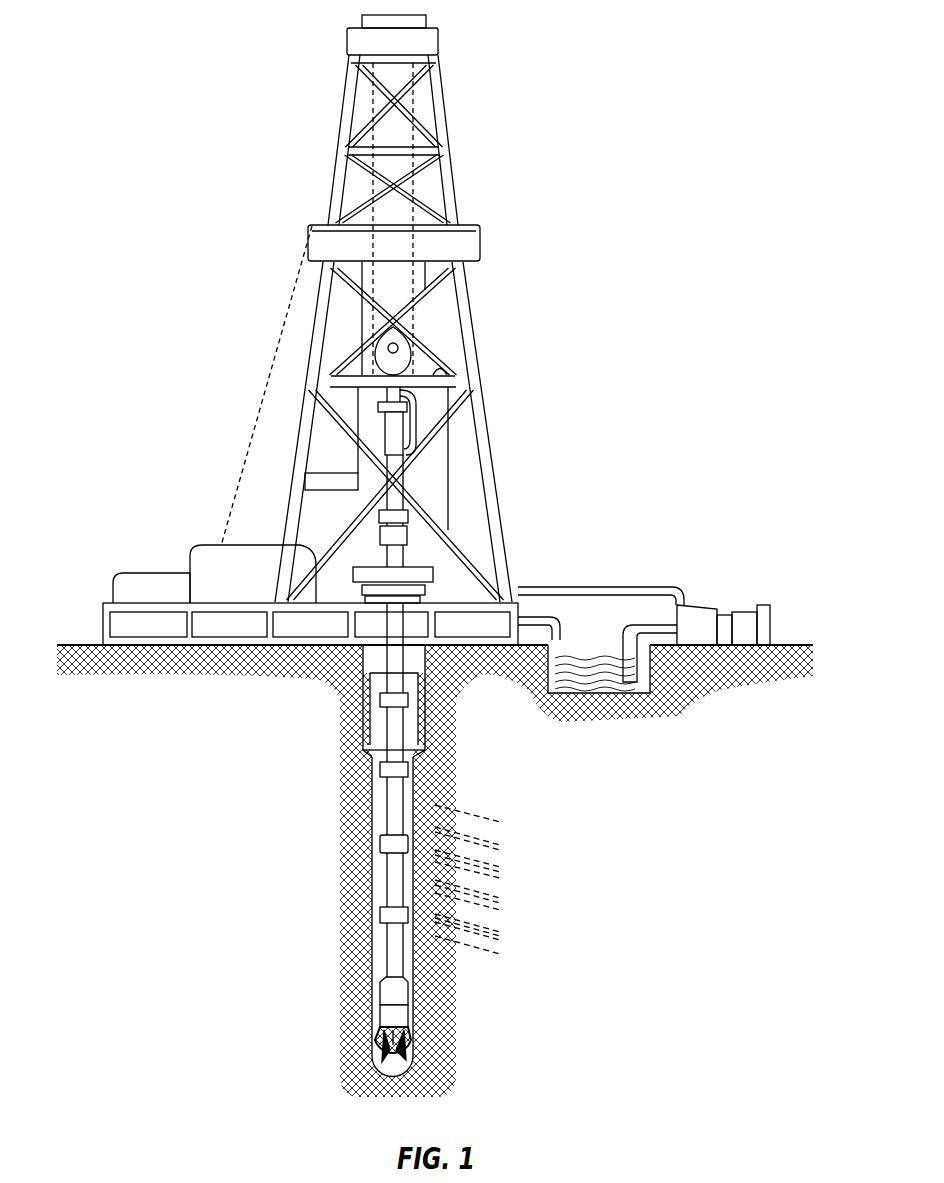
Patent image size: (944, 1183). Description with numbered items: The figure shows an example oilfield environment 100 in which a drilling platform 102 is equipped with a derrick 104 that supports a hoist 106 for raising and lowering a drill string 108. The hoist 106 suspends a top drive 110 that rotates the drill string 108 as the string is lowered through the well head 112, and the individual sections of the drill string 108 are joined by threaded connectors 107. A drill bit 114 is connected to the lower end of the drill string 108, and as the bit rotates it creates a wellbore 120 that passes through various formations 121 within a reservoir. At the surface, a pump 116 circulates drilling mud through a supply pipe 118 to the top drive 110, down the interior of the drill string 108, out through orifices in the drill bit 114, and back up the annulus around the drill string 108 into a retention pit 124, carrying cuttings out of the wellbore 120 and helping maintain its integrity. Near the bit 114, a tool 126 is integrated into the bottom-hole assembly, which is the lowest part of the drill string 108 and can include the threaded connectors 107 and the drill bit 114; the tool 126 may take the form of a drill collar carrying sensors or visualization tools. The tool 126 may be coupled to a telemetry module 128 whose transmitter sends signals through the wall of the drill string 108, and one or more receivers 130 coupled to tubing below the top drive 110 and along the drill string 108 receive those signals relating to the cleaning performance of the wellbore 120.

The oilfield environment 100 is at (725, 52).
The drilling platform 102 is at (103, 625).
The derrick 104 is at (456, 183).
The hoist 106 is at (400, 348).
The threaded connectors 107 is at (380, 767).
The drill string 108 is at (410, 790).
The top drive 110 is at (395, 430).
The well head 112 is at (418, 573).
The drill bit 114 is at (412, 1050).
The pump 116 is at (700, 605).
The supply pipe 118 is at (610, 587).
The wellbore 120 is at (372, 800).
The formations 121 is at (500, 822).
The retention pit 124 is at (598, 686).
The tool 126 is at (380, 1015).
The telemetry module 128 is at (380, 993).
The receivers 130 is at (400, 514).